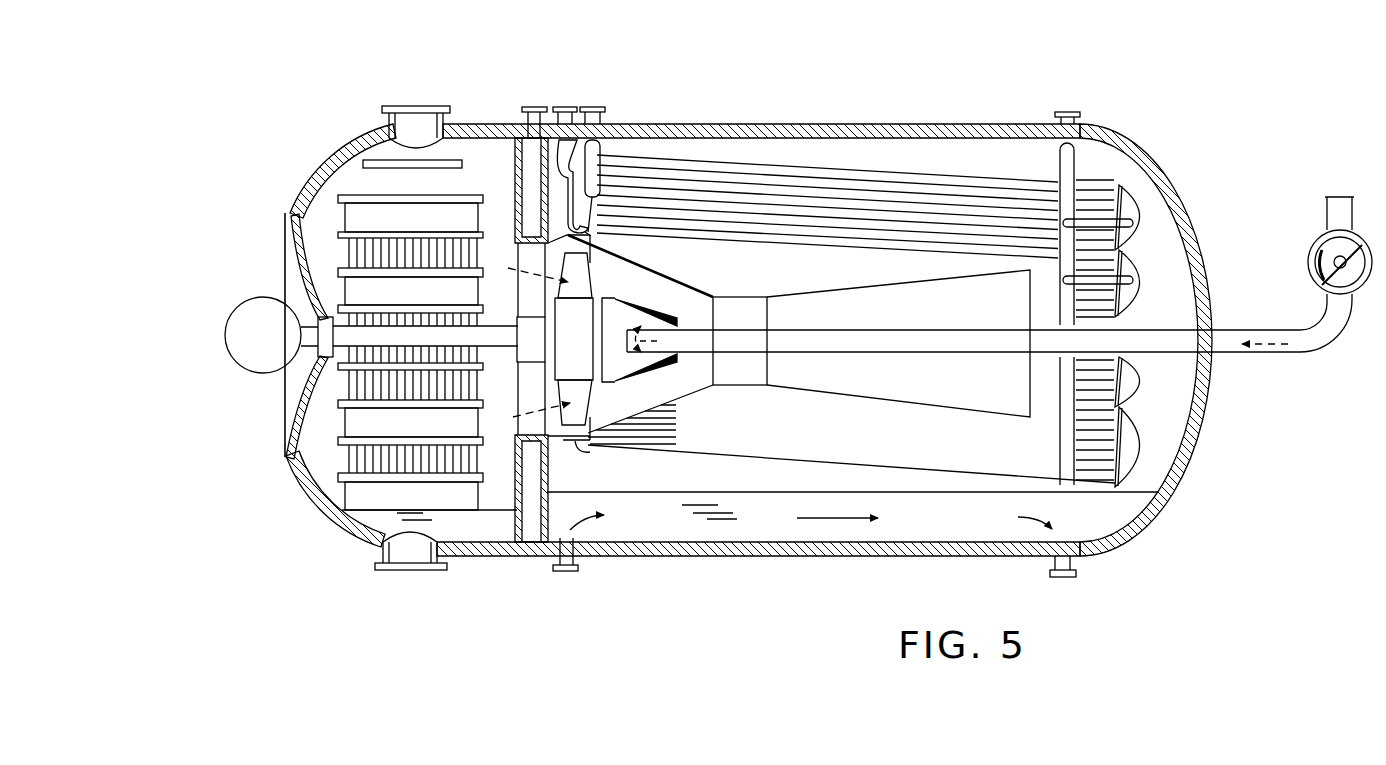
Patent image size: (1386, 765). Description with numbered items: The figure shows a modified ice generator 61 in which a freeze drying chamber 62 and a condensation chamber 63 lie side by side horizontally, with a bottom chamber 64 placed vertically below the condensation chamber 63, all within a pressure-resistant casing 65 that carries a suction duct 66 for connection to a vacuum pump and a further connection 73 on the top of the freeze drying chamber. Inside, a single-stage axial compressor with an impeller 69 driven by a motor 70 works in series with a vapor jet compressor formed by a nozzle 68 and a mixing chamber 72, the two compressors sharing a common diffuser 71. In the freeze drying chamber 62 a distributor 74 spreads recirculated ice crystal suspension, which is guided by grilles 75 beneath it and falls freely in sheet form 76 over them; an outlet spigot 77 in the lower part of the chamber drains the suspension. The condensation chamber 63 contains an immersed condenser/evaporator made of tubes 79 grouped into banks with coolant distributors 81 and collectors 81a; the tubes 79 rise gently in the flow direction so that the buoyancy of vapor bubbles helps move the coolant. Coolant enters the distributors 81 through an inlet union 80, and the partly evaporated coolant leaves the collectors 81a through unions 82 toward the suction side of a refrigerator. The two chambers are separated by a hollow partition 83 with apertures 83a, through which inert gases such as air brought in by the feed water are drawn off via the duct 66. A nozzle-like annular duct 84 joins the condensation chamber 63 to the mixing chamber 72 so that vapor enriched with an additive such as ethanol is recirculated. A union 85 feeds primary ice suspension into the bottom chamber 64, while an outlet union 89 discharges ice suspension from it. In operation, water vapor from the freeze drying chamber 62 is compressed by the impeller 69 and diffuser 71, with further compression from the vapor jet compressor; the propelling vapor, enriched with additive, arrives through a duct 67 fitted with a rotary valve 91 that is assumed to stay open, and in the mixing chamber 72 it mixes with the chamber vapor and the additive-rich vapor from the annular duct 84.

The ice generator 61 is at (880, 110).
The freeze drying chamber 62 is at (358, 160).
The condensation chamber 63 is at (943, 148).
The bottom chamber 64 is at (840, 532).
The pressure-resistant casing 65 is at (738, 125).
The suction duct 66 is at (538, 107).
The duct 67 is at (1278, 355).
The nozzle 68 is at (668, 355).
The impeller 69 is at (563, 352).
The motor 70 is at (253, 374).
The diffuser 71 is at (914, 383).
The mixing chamber 72 is at (696, 300).
The top nozzle 73 is at (415, 107).
The distributor 74 is at (455, 165).
The grilles 75 is at (402, 235).
The sheet form 76 is at (425, 352).
The outlet spigot 77 is at (380, 550).
The tubes 79 is at (803, 218).
The inlet union 80 is at (1083, 126).
The coolant distributors 81 is at (1130, 237).
The collectors 81a is at (593, 232).
The unions 82 is at (597, 107).
The partition 83 is at (527, 530).
The apertures 83a is at (543, 215).
The annular duct 84 is at (585, 246).
The union 85 is at (577, 567).
The outlet union 89 is at (1076, 569).
The rotary valve 91 is at (1310, 258).